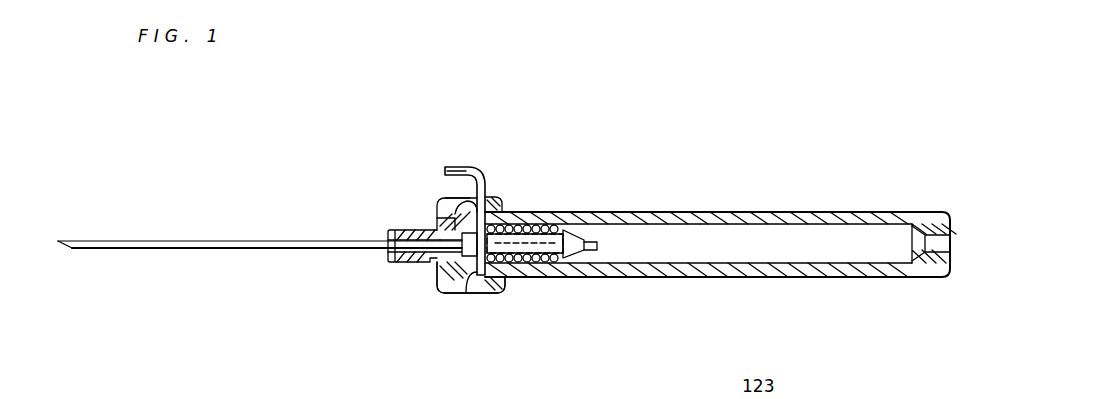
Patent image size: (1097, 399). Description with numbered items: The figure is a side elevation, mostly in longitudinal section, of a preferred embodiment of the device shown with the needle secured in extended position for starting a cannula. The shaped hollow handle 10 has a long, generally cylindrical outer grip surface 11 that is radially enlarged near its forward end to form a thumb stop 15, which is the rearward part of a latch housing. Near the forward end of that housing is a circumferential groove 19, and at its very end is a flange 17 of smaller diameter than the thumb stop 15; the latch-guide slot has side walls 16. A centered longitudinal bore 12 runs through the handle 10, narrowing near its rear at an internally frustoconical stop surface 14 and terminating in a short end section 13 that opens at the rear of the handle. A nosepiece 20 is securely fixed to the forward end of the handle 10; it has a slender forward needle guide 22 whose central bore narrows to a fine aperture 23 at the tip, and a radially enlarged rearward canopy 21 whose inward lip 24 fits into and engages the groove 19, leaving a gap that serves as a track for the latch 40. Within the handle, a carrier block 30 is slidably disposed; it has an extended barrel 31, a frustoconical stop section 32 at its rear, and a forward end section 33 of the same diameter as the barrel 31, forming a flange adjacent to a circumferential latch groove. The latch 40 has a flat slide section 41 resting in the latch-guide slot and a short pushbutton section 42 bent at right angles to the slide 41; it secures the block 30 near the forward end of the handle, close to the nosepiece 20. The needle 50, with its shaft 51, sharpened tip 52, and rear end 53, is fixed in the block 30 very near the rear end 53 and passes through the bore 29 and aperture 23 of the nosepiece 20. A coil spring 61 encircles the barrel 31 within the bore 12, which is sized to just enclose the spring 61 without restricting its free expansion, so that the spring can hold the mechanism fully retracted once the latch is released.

The handle 10 is at (772, 146).
The outer grip surface 11 is at (800, 278).
The longitudinal bore 12 is at (808, 226).
The end section 13 is at (932, 233).
The stop surface 14 is at (903, 233).
The thumb stop 15 is at (505, 292).
The latch-guide slot side walls 16 is at (480, 292).
The flange 17 is at (452, 205).
The circumferential groove 19 is at (458, 200).
The nosepiece 20 is at (458, 302).
The canopy 21 is at (438, 287).
The needle guide 22 is at (392, 262).
The aperture 23 is at (388, 252).
The inward lip 24 is at (447, 218).
The bore 29 is at (405, 232).
The carrier block 30 is at (625, 224).
The barrel 31 is at (555, 238).
The stop section 32 is at (584, 232).
The forward end section 33 is at (440, 279).
The latch 40 is at (488, 156).
The slide section 41 is at (494, 190).
The pushbutton section 42 is at (455, 167).
The needle 50 is at (250, 226).
The needle shaft 51 is at (164, 240).
The sharpened tip 52 is at (64, 247).
The rear end 53 is at (598, 246).
The coil spring 61 is at (545, 265).